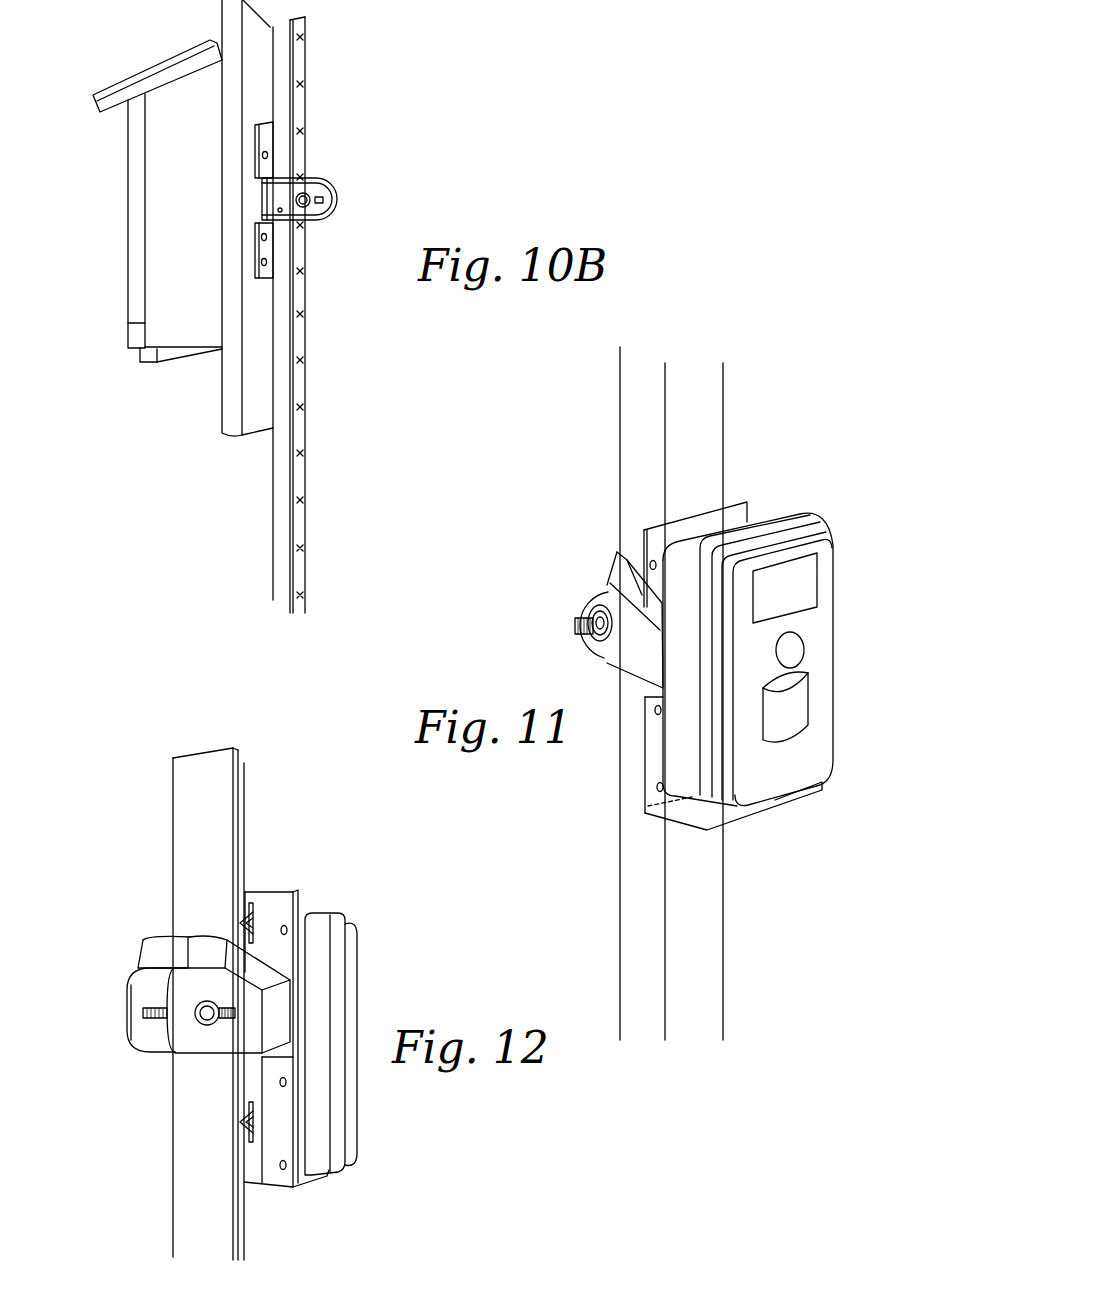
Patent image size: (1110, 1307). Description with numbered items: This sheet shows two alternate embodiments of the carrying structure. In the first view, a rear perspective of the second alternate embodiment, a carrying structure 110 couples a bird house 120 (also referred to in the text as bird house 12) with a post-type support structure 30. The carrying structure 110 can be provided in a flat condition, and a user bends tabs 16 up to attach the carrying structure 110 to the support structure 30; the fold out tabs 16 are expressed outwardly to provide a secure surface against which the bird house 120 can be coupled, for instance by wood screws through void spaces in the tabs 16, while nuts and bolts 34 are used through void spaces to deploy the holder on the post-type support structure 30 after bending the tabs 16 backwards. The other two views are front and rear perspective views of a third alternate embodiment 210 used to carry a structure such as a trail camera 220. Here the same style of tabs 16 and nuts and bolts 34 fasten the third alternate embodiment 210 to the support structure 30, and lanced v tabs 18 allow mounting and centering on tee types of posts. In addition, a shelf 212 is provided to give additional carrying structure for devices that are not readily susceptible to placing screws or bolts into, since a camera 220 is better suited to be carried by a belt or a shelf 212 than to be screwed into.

In FIG. 10B, the carrying structure 110 is at (357, 178).
In FIG. 10B, the bird house 120 is at (172, 207).
In FIG. 10B, the bird house 12 is at (274, 248).
In FIG. 11, the bird house 12 is at (653, 748).
In FIG. 12, the bird house 12 is at (290, 1108).
In FIG. 10B, the tabs 16 is at (313, 218).
In FIG. 11, the tabs 16 is at (612, 645).
In FIG. 12, the tabs 16 is at (150, 1043).
In FIG. 12, the lanced v tabs 18 is at (253, 922).
In FIG. 10B, the support structure 30 is at (305, 438).
In FIG. 11, the support structure 30 is at (636, 858).
In FIG. 12, the support structure 30 is at (200, 795).
In FIG. 10B, the nuts and bolts 34 is at (318, 205).
In FIG. 11, the nuts and bolts 34 is at (575, 627).
In FIG. 12, the nuts and bolts 34 is at (207, 1022).
In FIG. 11, the third alternate embodiment 210 is at (582, 603).
In FIG. 12, the third alternate embodiment 210 is at (127, 975).
In FIG. 11, the shelf 212 is at (752, 806).
In FIG. 12, the shelf 212 is at (313, 1186).
In FIG. 11, the trail camera 220 is at (823, 577).
In FIG. 12, the trail camera 220 is at (337, 1003).